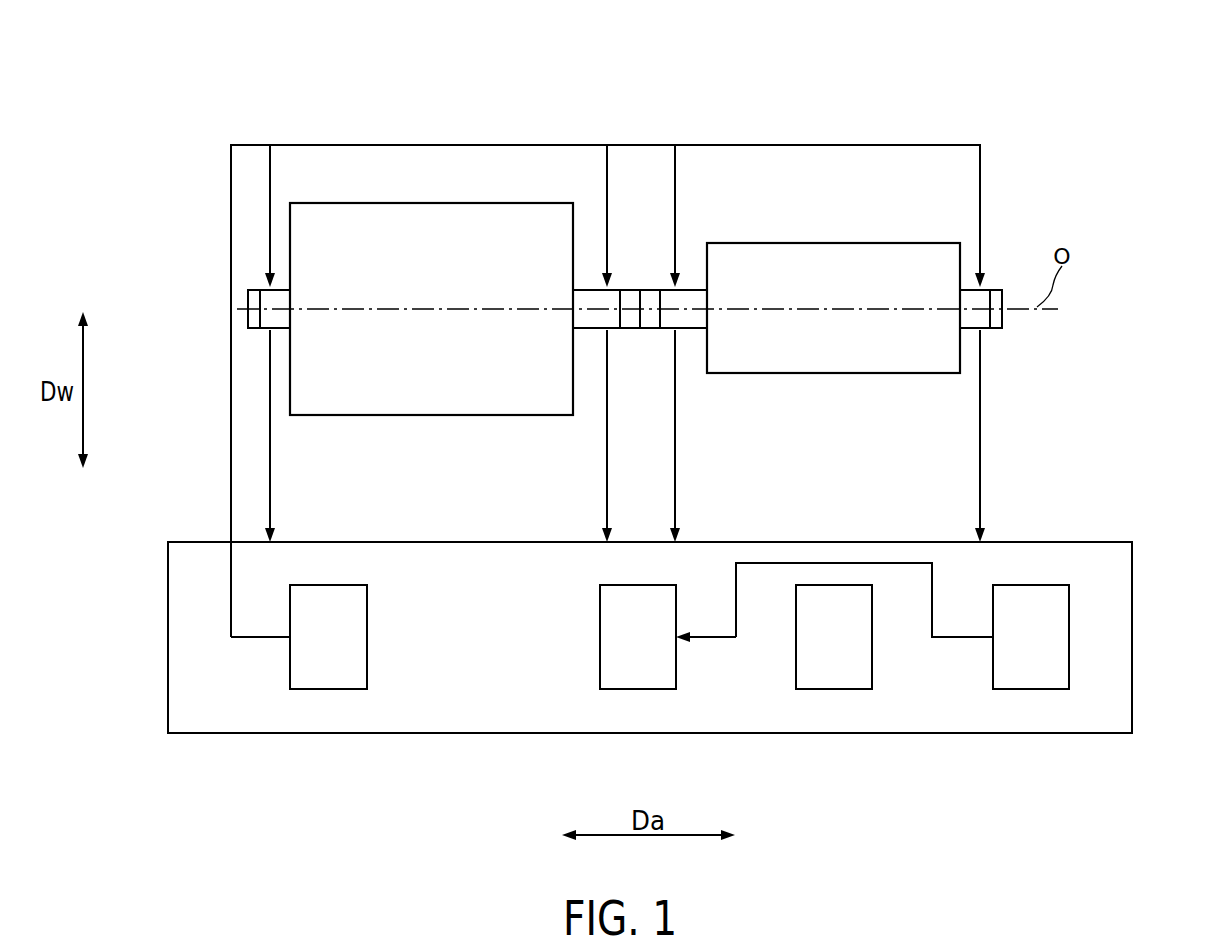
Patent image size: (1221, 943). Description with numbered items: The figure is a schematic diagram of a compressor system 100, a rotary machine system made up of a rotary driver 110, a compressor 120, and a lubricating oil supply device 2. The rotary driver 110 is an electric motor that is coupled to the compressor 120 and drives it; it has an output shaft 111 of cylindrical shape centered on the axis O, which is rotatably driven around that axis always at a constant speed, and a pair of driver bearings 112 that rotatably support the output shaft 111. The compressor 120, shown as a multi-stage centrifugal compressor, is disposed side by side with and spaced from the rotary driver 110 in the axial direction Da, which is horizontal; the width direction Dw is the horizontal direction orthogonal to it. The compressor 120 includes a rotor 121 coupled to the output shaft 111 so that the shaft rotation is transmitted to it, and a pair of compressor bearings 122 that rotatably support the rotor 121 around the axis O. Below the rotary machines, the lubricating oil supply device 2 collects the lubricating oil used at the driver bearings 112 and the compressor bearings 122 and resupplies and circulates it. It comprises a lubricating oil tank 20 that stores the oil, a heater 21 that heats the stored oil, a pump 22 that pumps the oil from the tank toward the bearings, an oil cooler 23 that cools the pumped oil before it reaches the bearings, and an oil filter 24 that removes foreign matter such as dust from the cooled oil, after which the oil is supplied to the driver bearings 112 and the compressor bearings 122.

The compressor system 100 is at (1082, 76).
The compressor 120 is at (446, 214).
The compressor bearings 122 is at (277, 320).
The rotor 121 is at (628, 296).
The rotary driver 110 is at (797, 252).
The driver bearings 112 is at (685, 318).
The output shaft 111 is at (995, 292).
The lubricating oil supply device 2 is at (682, 649).
The lubricating oil tank 20 is at (1107, 718).
The heater 21 is at (836, 677).
The pump 22 is at (1032, 677).
The oil cooler 23 is at (640, 677).
The oil filter 24 is at (330, 677).